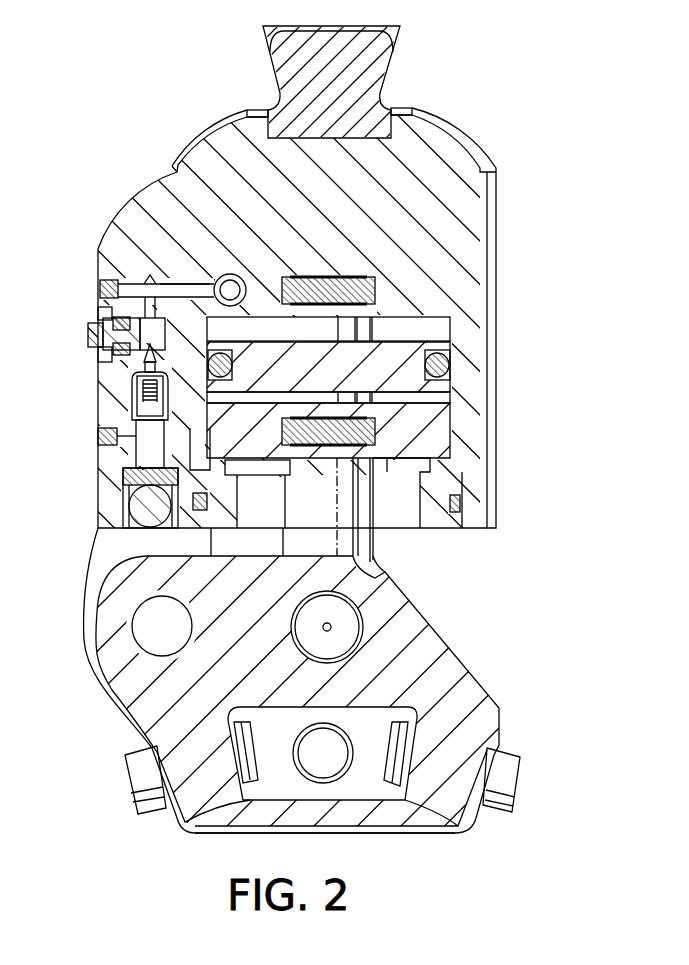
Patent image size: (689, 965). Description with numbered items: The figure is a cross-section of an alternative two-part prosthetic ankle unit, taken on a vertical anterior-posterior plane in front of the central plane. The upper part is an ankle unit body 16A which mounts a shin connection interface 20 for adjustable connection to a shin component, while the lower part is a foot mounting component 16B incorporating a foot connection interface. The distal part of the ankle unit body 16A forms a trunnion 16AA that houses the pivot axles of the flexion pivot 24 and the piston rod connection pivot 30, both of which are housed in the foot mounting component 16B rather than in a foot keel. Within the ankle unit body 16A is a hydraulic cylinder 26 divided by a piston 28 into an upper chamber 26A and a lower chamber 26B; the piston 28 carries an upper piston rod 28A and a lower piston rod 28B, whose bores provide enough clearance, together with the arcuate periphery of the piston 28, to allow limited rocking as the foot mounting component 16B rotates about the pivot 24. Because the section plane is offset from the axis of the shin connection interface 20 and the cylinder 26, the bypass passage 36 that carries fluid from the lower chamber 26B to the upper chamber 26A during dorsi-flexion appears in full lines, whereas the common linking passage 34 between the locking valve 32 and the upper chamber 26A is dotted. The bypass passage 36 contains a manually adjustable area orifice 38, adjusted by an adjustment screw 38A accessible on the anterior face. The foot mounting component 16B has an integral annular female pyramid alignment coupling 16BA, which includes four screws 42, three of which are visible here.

The shin connection interface 20 is at (389, 68).
The ankle unit body 16A is at (488, 182).
The trunnion 16AA is at (104, 547).
The foot mounting component 16B is at (455, 654).
The annular female pyramid alignment coupling 16BA is at (458, 825).
The flexion pivot 24 is at (134, 627).
The cylinder 26 is at (447, 396).
The upper chamber 26A is at (450, 322).
The lower chamber 26B is at (447, 404).
The piston 28 is at (448, 340).
The upper piston rod 28A is at (290, 328).
The lower piston rod 28B is at (365, 548).
The piston rod connection pivot 30 is at (347, 616).
The locking valve 32 is at (233, 272).
The common linking passage 34 is at (214, 316).
The bypass passage 36 is at (99, 289).
The manually adjustable area orifice 38 is at (103, 348).
The adjustment screw 38A is at (89, 333).
The screws 42 is at (132, 748).